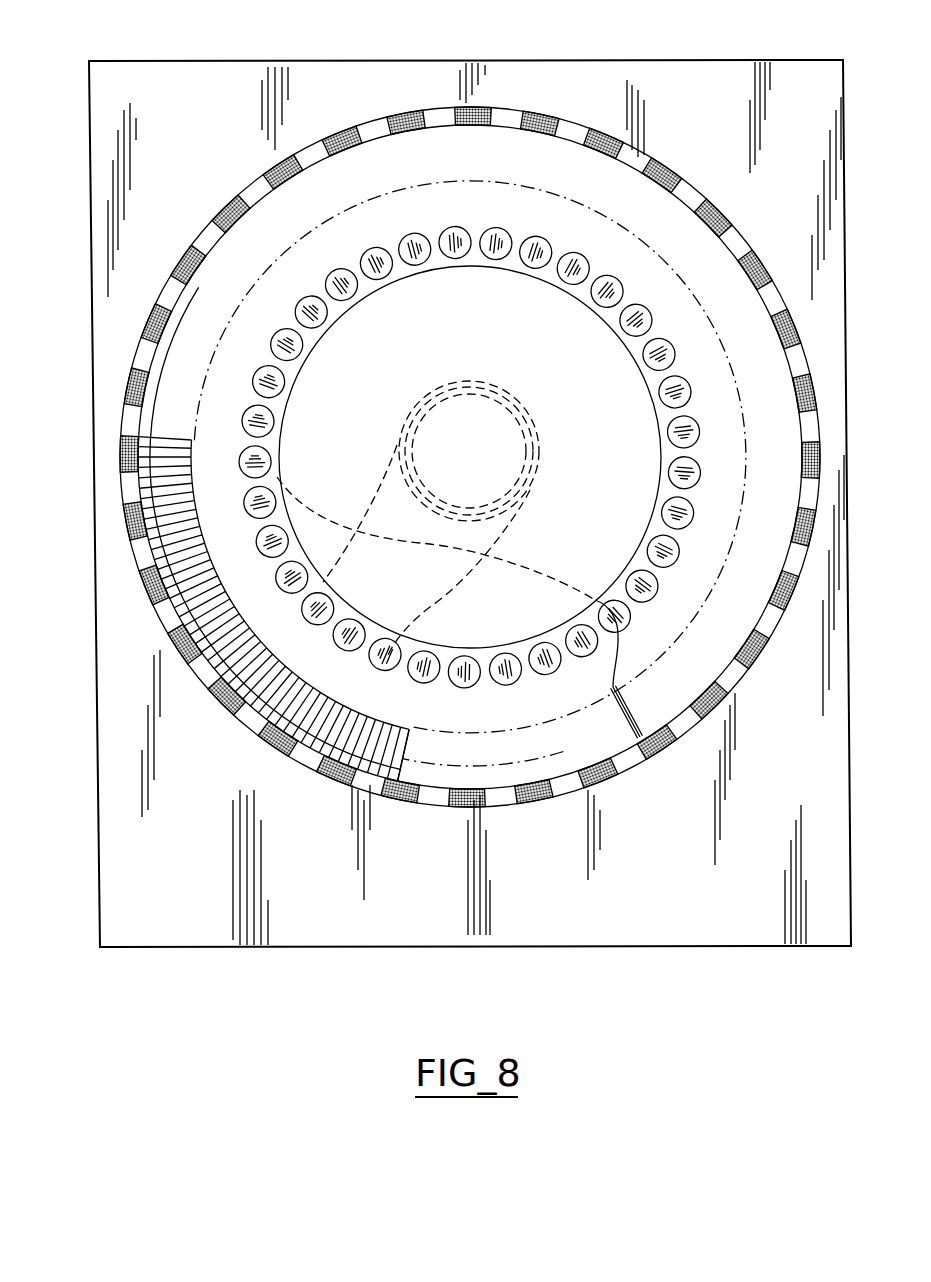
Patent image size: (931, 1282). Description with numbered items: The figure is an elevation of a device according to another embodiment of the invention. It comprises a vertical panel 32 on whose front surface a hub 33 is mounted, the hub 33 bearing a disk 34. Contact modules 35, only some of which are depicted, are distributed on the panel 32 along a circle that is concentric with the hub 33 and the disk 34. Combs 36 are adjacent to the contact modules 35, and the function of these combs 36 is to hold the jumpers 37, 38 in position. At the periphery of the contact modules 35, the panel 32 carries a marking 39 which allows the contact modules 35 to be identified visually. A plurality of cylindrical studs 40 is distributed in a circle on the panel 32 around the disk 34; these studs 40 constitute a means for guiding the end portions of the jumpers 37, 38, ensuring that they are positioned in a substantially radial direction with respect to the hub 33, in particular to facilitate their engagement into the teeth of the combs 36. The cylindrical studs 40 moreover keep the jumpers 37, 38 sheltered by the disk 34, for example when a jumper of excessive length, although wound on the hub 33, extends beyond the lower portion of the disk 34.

The vertical panel 32 is at (186, 922).
The hub 33 is at (487, 395).
The disk 34 is at (477, 290).
The contact modules 35 is at (183, 630).
The combs 36 is at (187, 566).
The jumper 37 is at (278, 452).
The jumper 38 is at (325, 581).
The marking 39 is at (140, 335).
The cylindrical studs 40 is at (396, 666).